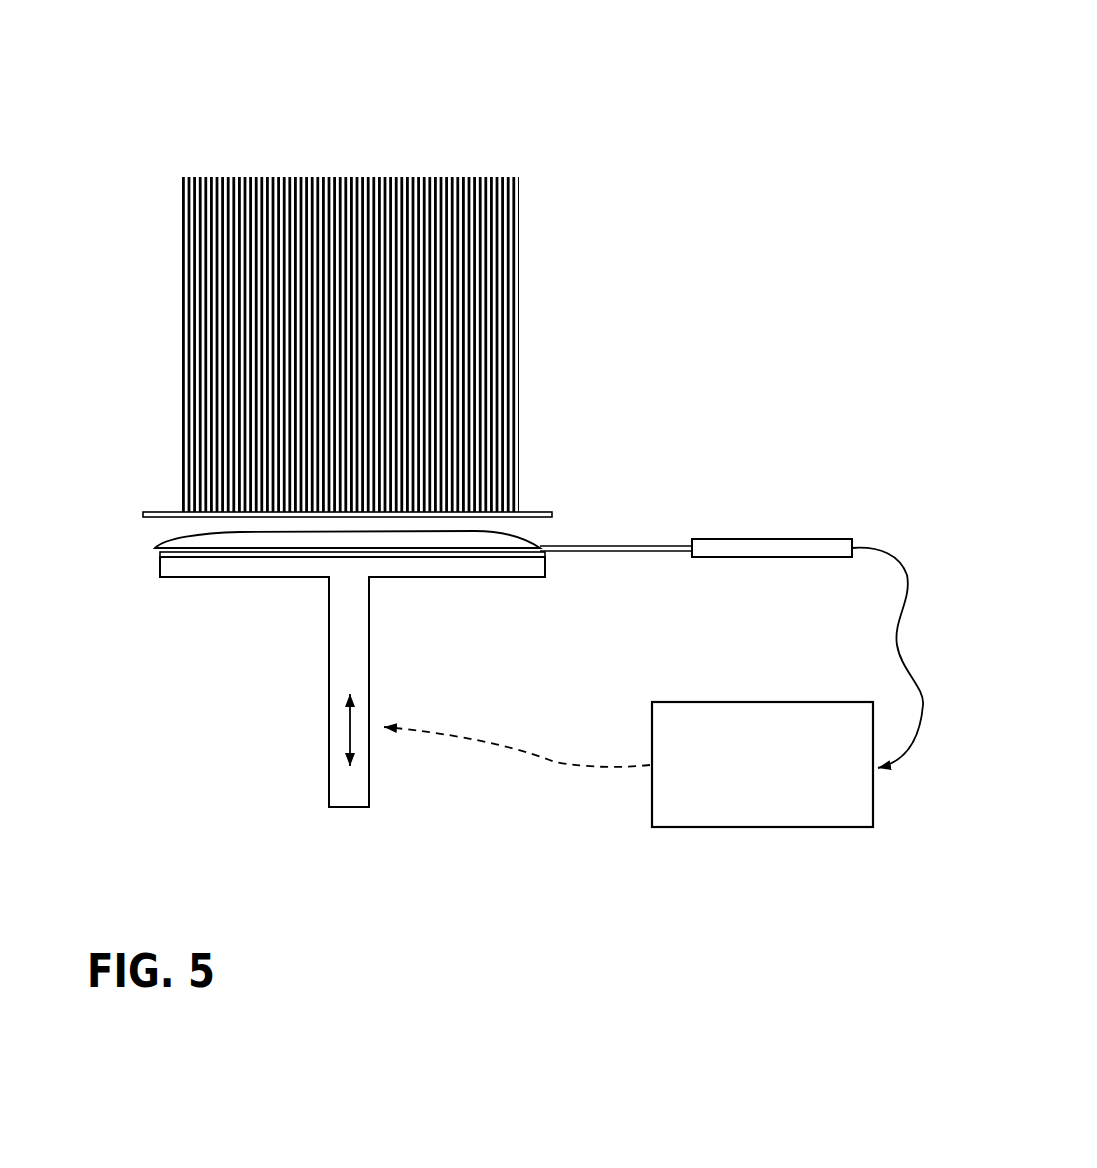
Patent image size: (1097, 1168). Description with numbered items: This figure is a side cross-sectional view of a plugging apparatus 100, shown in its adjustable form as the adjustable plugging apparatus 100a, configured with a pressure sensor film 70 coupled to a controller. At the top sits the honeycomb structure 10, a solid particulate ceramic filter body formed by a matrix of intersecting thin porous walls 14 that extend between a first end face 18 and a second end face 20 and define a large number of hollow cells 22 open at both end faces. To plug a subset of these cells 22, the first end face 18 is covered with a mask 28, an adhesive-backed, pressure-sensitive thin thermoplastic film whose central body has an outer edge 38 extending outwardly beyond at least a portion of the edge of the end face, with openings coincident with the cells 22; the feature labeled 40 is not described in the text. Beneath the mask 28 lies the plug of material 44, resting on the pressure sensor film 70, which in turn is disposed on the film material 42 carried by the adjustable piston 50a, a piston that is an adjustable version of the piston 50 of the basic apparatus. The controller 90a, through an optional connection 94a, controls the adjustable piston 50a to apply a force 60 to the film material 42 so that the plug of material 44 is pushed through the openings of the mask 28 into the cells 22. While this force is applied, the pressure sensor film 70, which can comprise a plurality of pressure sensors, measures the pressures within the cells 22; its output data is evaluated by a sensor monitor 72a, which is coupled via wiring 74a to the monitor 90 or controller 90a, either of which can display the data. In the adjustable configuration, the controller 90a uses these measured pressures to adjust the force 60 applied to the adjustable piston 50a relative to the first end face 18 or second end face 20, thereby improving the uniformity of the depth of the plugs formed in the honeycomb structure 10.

The plugging apparatus 100 is at (501, 466).
The adjustable plugging apparatus 100a is at (580, 63).
The honeycomb structure 10 is at (552, 190).
The second end face 20 is at (445, 173).
The walls 14 is at (500, 338).
The cells 22 is at (482, 360).
The first end face 18 is at (488, 524).
The mask 28 is at (145, 512).
The outer edge 38 is at (538, 511).
The plate edge 40 is at (553, 515).
The plug of material 44 is at (222, 540).
The film material 42 is at (500, 553).
The pressure sensor film 70 is at (530, 551).
The sensor monitor 72a is at (795, 539).
The wiring 74a is at (907, 642).
The stage 50 is at (326, 707).
The adjustable piston 50a is at (236, 580).
The force 60 is at (352, 748).
The connection 94a is at (557, 762).
The monitor 90 is at (762, 811).
The controller 90a is at (755, 827).